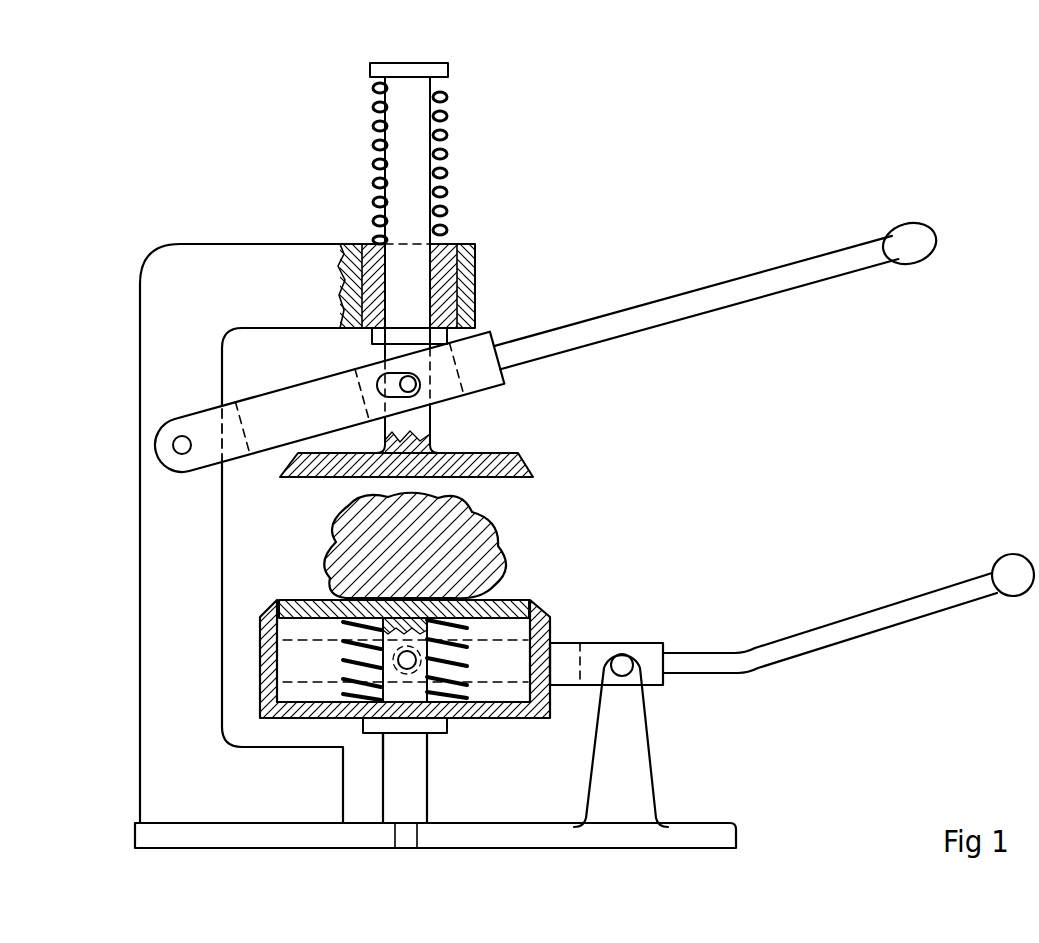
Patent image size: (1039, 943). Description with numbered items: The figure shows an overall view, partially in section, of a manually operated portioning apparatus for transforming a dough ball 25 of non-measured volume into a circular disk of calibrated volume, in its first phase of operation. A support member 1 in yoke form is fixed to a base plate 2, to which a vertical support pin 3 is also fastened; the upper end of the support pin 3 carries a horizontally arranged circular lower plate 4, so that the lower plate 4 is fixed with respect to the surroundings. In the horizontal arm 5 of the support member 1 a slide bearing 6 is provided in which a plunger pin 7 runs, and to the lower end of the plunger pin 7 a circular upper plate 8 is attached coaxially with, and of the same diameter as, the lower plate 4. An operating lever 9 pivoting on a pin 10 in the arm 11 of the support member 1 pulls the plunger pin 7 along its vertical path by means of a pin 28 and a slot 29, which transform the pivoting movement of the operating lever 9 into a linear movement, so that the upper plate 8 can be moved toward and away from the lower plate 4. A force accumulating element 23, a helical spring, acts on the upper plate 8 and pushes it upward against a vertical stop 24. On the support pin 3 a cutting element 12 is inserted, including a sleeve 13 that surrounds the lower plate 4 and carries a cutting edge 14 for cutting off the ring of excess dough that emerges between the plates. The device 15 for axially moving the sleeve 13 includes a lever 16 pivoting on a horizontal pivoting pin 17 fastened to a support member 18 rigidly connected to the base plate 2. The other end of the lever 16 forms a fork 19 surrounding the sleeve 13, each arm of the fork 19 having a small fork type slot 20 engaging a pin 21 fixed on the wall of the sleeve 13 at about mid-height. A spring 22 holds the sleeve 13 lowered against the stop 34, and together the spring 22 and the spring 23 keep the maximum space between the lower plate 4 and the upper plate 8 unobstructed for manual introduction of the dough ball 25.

The support member 1 is at (165, 343).
The base plate 2 is at (726, 840).
The support pin 3 is at (415, 768).
The lower plate 4 is at (520, 604).
The horizontal arm 5 is at (292, 268).
The slide bearing 6 is at (465, 250).
The plunger pin 7 is at (410, 178).
The upper plate 8 is at (520, 457).
The operating lever 9 is at (867, 250).
The pin 10 is at (182, 445).
The arm 11 is at (160, 527).
The cutting element 12 is at (580, 615).
The sleeve 13 is at (258, 638).
The cutting edge 14 is at (340, 622).
The device for moving 15 is at (768, 622).
The lever 16 is at (918, 602).
The pivoting pin 17 is at (647, 683).
The support member 18 is at (638, 762).
The fork 19 is at (562, 688).
The fork type slot 20 is at (383, 735).
The pin 21 is at (398, 668).
The spring 22 is at (383, 648).
The force accumulating element 23 is at (443, 103).
The vertical stop 24 is at (375, 336).
The dough ball 25 is at (482, 526).
The pin 28 is at (412, 380).
The slot 29 is at (420, 398).
The stop 34 is at (445, 725).